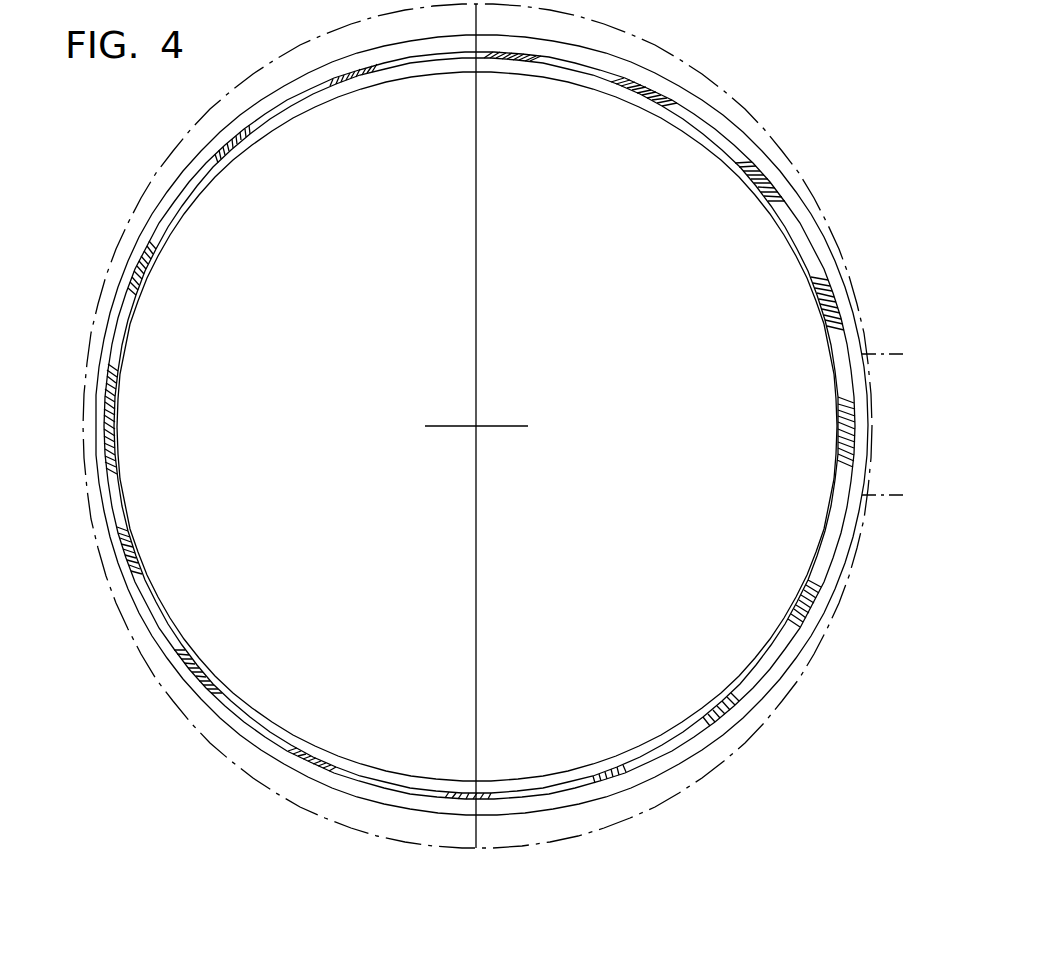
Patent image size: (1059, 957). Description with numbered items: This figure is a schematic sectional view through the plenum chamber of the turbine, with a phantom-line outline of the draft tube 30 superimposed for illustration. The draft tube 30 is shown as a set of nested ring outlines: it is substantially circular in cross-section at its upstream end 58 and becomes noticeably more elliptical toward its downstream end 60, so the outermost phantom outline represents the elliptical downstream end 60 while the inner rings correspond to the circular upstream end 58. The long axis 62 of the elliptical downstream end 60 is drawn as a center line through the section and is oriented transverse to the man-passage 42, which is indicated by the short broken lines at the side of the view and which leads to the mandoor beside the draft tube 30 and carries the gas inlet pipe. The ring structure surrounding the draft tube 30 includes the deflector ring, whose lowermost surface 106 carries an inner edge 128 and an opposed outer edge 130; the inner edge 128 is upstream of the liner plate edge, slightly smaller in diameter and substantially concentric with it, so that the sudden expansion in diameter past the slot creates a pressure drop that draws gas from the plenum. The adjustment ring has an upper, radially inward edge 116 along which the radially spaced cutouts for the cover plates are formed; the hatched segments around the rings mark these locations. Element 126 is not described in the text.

The draft tube 30 is at (703, 78).
The man-passage 42 is at (892, 495).
The upstream end 58 is at (760, 207).
The downstream end 60 is at (796, 162).
The long axis 62 is at (481, 262).
The lowermost surface 106 is at (196, 180).
The upper, radially inward edge 116 is at (343, 94).
The outer wall 126 is at (395, 812).
The inner edge 128 is at (268, 720).
The outer edge 130 is at (300, 755).